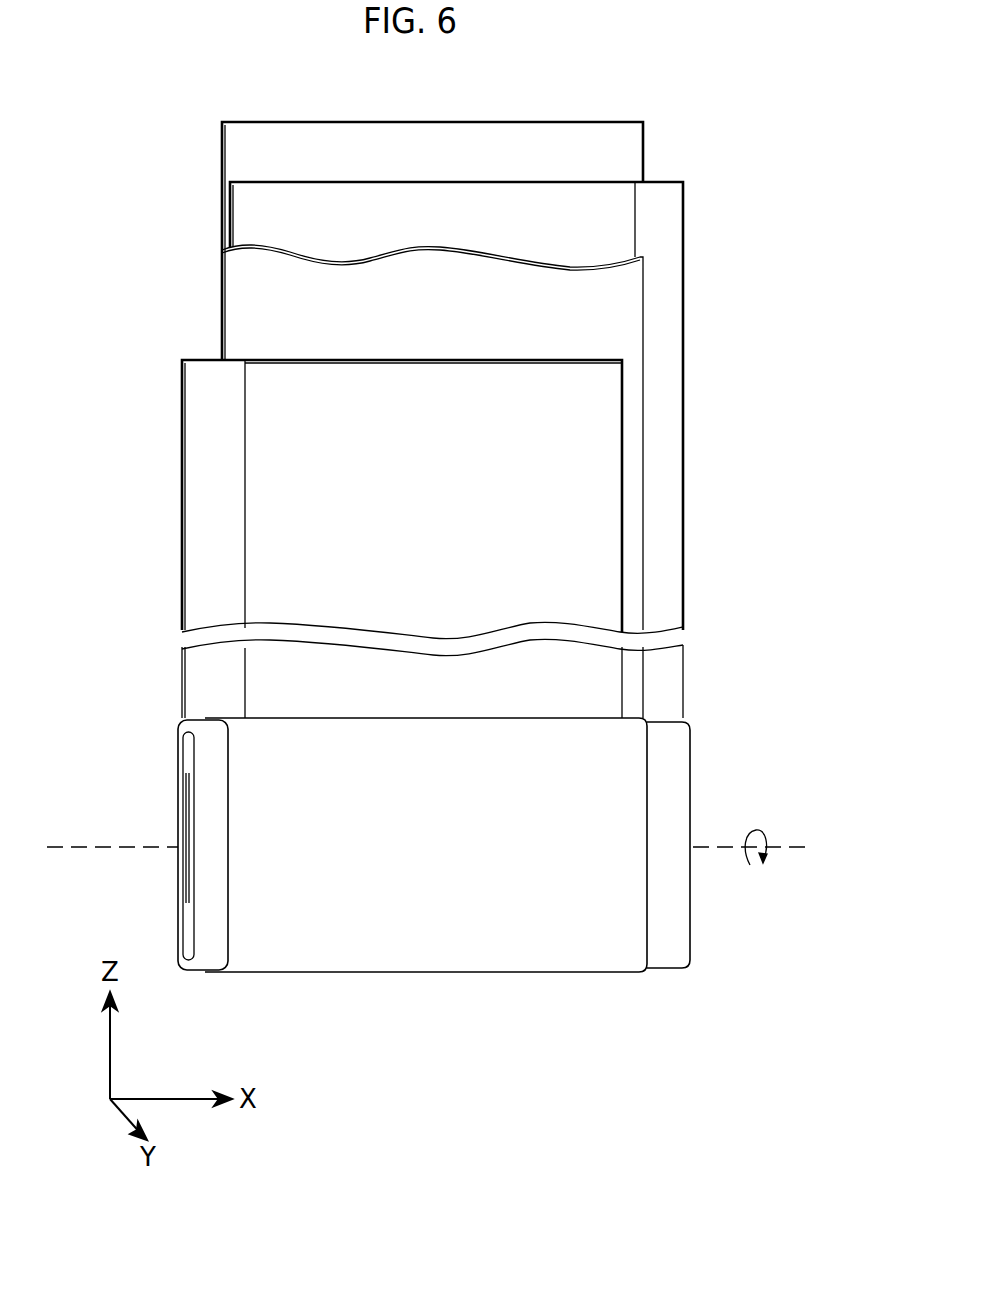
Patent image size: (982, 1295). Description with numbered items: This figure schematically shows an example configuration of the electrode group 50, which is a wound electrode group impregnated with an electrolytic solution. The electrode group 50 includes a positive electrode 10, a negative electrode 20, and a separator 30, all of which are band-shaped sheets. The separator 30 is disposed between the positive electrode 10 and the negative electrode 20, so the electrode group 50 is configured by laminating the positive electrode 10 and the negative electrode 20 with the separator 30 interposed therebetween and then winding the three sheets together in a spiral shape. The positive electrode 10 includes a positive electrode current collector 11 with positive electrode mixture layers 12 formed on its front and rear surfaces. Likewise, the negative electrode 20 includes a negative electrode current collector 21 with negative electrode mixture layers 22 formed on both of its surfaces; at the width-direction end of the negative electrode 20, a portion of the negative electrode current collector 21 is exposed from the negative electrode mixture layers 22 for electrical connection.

The positive electrode 10 is at (361, 539).
The positive electrode current collector 11 is at (232, 505).
The positive electrode mixture layers 12 is at (285, 565).
The negative electrode 20 is at (537, 450).
The negative electrode current collector 21 is at (650, 295).
The negative electrode mixture layers 22 is at (590, 208).
The separator 30 is at (638, 133).
The electrode group 50 is at (552, 857).